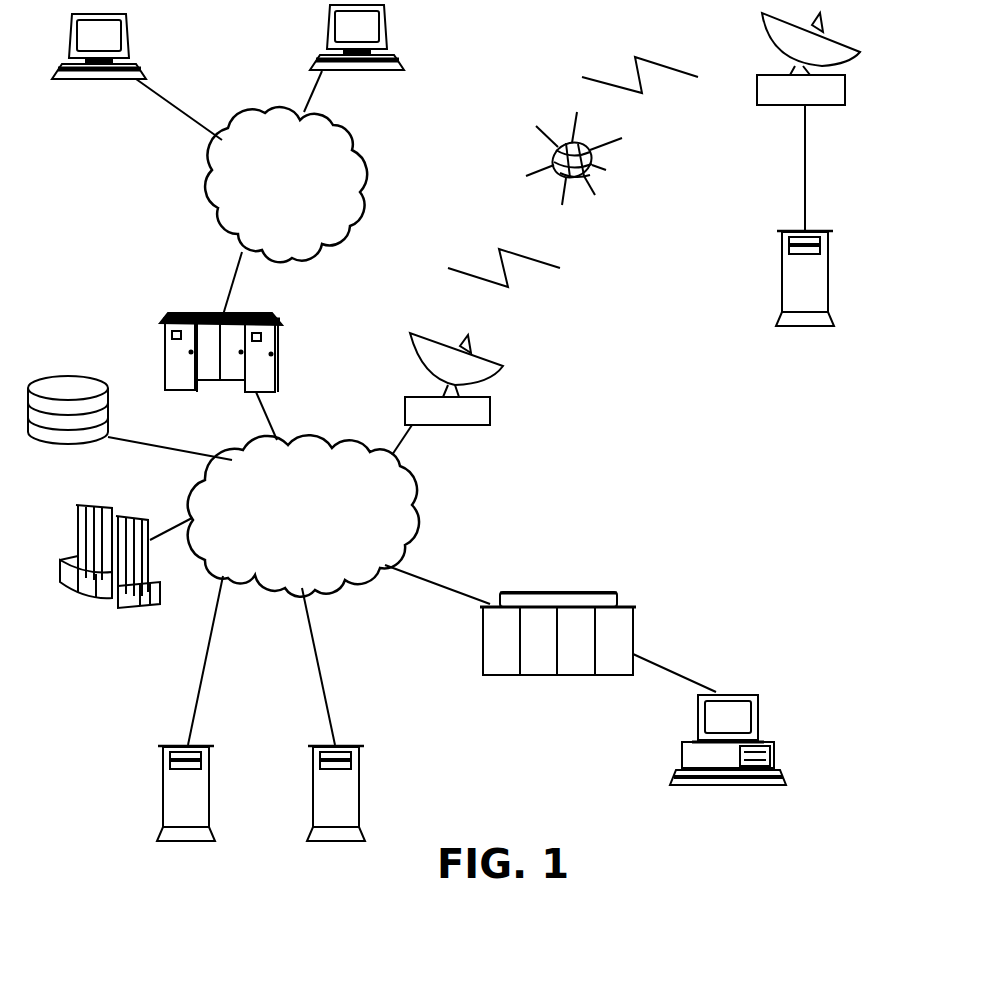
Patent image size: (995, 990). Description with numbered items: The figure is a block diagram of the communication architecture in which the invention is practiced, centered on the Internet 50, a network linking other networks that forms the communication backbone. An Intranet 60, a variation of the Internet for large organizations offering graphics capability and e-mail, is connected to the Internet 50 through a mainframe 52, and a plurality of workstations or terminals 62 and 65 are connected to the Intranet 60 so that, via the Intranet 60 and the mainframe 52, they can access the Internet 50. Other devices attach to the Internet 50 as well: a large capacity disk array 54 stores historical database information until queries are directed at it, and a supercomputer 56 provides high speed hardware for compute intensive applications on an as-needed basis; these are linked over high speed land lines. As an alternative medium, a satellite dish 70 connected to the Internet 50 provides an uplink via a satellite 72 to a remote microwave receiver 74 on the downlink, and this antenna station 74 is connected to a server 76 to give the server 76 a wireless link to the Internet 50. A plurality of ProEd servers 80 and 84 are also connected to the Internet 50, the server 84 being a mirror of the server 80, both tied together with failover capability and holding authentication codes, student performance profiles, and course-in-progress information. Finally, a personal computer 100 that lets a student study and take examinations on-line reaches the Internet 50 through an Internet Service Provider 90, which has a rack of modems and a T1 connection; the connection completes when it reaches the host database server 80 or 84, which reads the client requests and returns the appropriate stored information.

The Internet 50 is at (398, 474).
The mainframe 52 is at (208, 392).
The disk array 54 is at (70, 452).
The supercomputer 56 is at (100, 593).
The Intranet 60 is at (347, 142).
The workstation or terminal 62 is at (130, 30).
The workstation or terminal 65 is at (388, 27).
The satellite dish 70 is at (490, 418).
The satellite 72 is at (573, 172).
The remote microwave receiver 74 is at (773, 106).
The server 76 is at (790, 290).
The ProEd server 80 is at (210, 790).
The ProEd server 84 is at (360, 790).
The Internet Service Provider 90 is at (573, 675).
The personal computer 100 is at (683, 758).